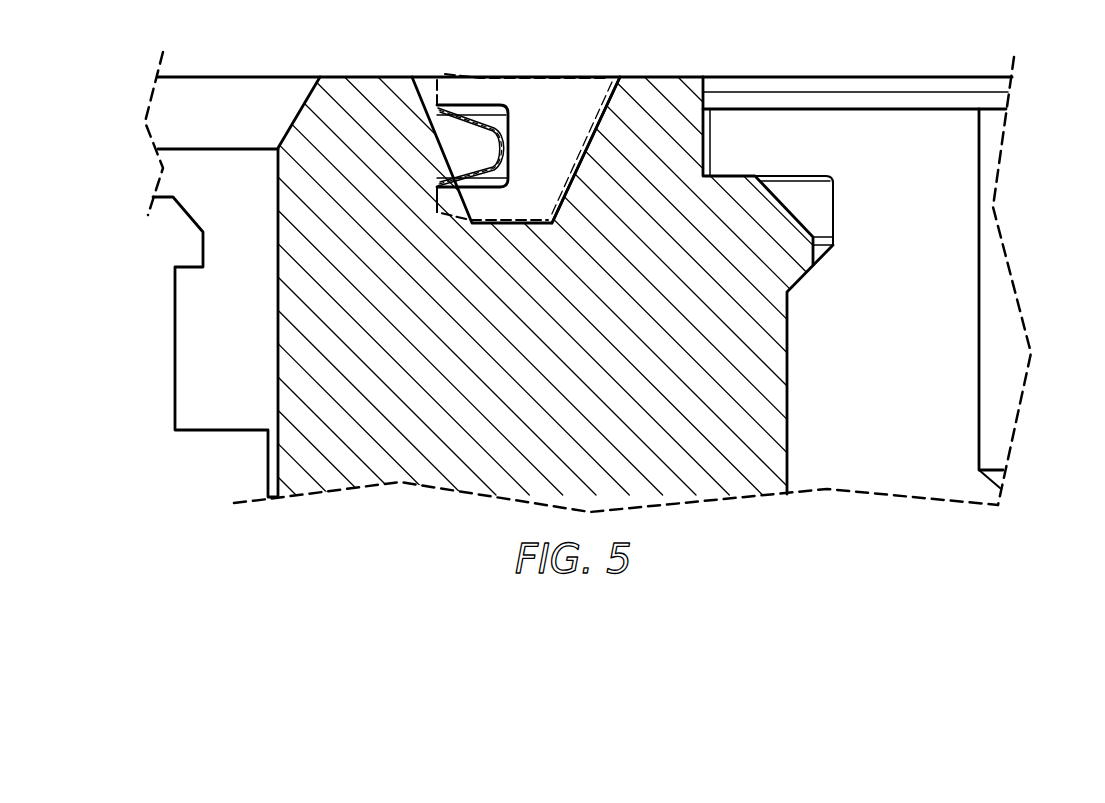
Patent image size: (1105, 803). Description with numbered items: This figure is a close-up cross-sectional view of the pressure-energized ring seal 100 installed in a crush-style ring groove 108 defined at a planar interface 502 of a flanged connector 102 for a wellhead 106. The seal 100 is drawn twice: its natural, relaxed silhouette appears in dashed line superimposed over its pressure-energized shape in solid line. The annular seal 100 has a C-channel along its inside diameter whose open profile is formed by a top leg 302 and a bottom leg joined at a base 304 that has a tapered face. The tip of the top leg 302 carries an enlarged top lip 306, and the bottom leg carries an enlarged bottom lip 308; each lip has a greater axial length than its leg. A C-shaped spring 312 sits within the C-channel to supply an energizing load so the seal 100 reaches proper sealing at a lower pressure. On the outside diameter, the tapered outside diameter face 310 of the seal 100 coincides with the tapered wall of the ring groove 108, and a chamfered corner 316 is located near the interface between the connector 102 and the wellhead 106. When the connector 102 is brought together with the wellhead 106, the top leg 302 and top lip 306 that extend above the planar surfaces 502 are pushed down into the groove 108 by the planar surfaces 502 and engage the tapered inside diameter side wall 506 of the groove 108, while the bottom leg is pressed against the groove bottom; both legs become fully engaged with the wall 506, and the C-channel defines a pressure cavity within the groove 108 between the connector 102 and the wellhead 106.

The pressure-energized ring seal 100 is at (540, 100).
The flanged connector 102 is at (978, 44).
The wellhead 106 is at (979, 298).
The ring groove 108 is at (440, 147).
The top leg 302 is at (464, 74).
The base 304 is at (560, 145).
The top lip 306 is at (452, 72).
The bottom lip 308 is at (437, 213).
The tapered outside diameter face 310 is at (570, 193).
The C-shaped spring 312 is at (437, 113).
The chamfered corner 316 is at (606, 79).
The planar interface 502 is at (126, 75).
The tapered inside diameter side wall 506 is at (440, 178).